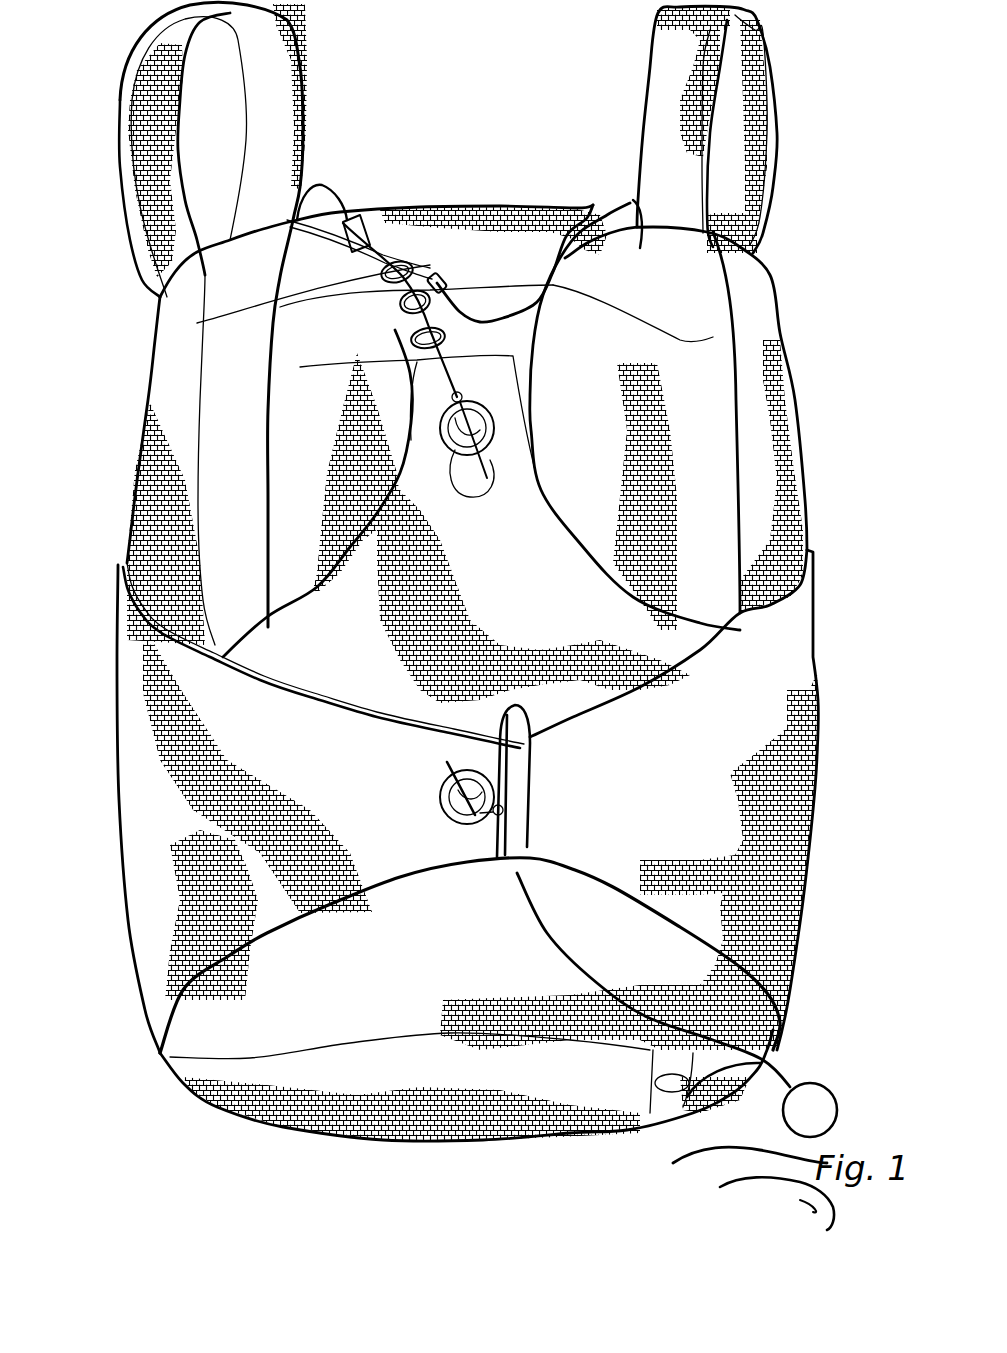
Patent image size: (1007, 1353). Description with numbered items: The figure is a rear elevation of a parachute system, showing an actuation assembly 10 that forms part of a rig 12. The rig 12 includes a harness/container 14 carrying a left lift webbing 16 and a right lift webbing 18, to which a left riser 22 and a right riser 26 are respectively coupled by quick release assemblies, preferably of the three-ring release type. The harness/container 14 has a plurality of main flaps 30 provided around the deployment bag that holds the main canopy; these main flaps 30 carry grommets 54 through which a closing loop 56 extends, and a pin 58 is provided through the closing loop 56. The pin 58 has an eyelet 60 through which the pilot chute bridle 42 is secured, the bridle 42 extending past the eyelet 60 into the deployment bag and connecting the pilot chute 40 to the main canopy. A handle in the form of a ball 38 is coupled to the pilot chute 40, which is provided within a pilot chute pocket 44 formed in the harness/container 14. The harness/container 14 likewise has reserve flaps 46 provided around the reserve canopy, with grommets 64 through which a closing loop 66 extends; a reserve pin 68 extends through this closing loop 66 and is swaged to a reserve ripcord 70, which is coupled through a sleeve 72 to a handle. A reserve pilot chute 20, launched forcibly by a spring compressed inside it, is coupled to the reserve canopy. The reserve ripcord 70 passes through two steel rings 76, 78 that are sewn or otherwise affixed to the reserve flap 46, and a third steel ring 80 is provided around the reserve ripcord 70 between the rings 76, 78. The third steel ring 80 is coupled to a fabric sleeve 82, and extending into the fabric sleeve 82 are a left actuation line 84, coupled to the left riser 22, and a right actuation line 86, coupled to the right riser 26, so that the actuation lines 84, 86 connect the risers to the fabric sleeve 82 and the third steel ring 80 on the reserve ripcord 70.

The actuation assembly 10 is at (445, 240).
The rig 12 is at (775, 262).
The harness/container 14 is at (650, 255).
The left lift webbing 16 is at (298, 112).
The right lift webbing 18 is at (653, 110).
The reserve pilot chute 20 is at (760, 303).
The left riser 22 is at (230, 402).
The right riser 26 is at (713, 357).
The main flaps 30 is at (143, 643).
The ball 38 is at (812, 1100).
The pilot chute 40 is at (673, 1063).
The pilot chute bridle 42 is at (517, 873).
The pilot chute pocket 44 is at (453, 1077).
The reserve flaps 46 is at (713, 337).
The grommets 54 is at (440, 797).
The closing loop 56 is at (448, 800).
The pin 58 is at (447, 767).
The eyelet 60 is at (505, 805).
The grommets 64 is at (495, 430).
The closing loop 66 is at (458, 470).
The reserve pin 68 is at (498, 478).
The reserve ripcord 70 is at (413, 292).
The sleeve 72 is at (357, 218).
The steel ring 76 is at (197, 323).
The steel ring 78 is at (300, 367).
The third steel ring 80 is at (280, 307).
The fabric sleeve 82 is at (425, 262).
The left actuation line 84 is at (385, 262).
The right actuation line 86 is at (600, 210).